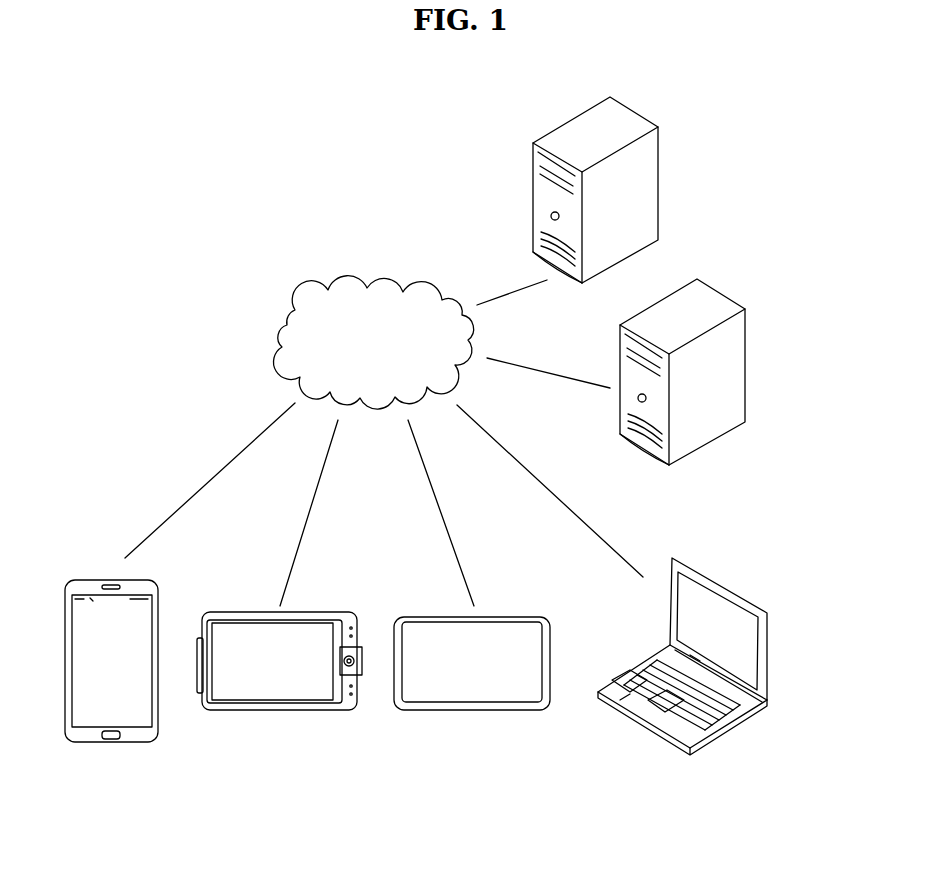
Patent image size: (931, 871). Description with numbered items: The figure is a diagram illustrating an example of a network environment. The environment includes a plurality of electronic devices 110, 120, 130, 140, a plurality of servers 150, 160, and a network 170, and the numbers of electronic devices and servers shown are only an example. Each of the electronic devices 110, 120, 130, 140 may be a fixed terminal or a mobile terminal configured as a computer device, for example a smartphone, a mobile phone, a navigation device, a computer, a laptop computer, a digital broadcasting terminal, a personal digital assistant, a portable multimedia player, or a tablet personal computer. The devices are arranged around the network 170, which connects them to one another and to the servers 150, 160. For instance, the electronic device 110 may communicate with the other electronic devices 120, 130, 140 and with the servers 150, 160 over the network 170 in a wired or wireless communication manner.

The electronic device 110 is at (110, 744).
The electronic device 120 is at (278, 711).
The electronic device 130 is at (472, 711).
The electronic device 140 is at (767, 657).
The server 150 is at (745, 360).
The server 160 is at (658, 180).
The network 170 is at (380, 278).